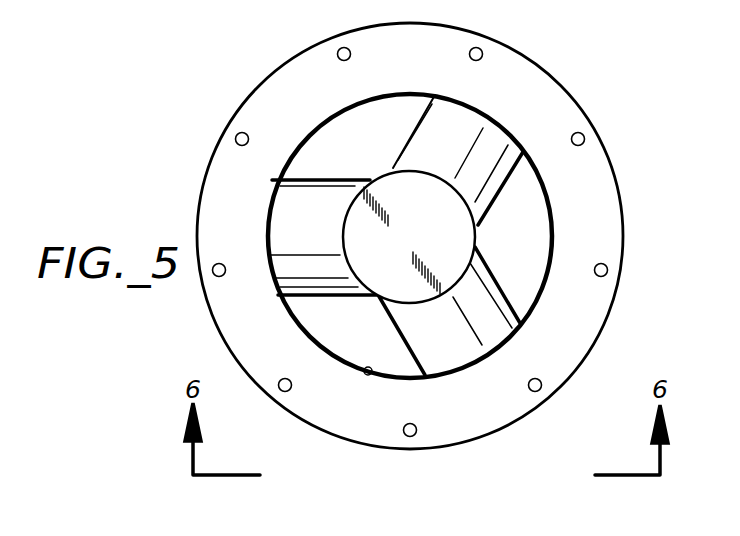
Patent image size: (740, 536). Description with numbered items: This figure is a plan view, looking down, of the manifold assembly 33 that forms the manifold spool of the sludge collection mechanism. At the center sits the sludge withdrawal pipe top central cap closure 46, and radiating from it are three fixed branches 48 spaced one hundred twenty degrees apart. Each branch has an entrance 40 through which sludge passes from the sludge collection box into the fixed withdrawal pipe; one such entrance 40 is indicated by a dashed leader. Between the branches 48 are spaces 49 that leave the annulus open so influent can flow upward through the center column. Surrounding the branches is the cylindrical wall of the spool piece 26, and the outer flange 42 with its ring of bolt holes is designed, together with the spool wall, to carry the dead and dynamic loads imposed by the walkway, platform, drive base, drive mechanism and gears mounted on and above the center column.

The manifold assembly 33 is at (222, 96).
The flange 42 is at (217, 167).
The fixed branches 48 is at (282, 232).
The spaces 49 is at (362, 156).
The sludge withdrawal pipe top central cap closure 46 is at (418, 248).
The spool piece 26 is at (366, 375).
The entrances 40 is at (470, 367).